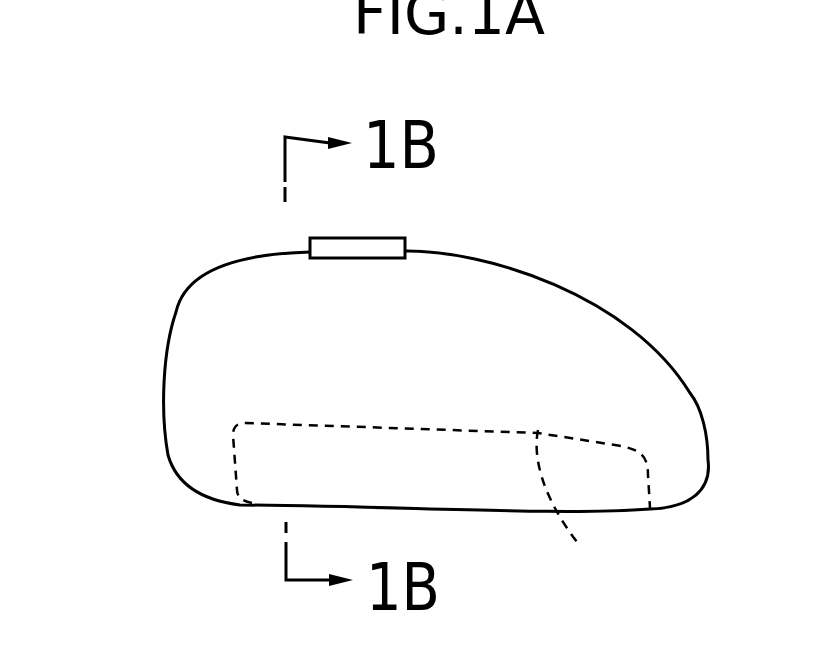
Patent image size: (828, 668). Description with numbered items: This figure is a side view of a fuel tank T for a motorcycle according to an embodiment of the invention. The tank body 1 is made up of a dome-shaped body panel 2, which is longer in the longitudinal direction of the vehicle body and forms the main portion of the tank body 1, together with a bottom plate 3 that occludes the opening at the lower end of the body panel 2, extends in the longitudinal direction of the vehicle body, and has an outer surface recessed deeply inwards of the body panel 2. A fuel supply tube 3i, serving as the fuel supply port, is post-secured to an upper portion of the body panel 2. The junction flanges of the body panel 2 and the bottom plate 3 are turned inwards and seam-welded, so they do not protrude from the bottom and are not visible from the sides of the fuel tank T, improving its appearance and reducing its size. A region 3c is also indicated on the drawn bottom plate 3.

The fuel tank T is at (553, 247).
The tank body 1 is at (235, 586).
The body panel 2 is at (170, 471).
The bottom plate 3 is at (326, 435).
The fuel supply tube 3i is at (388, 240).
The cut portion of inner layer 3c is at (581, 498).